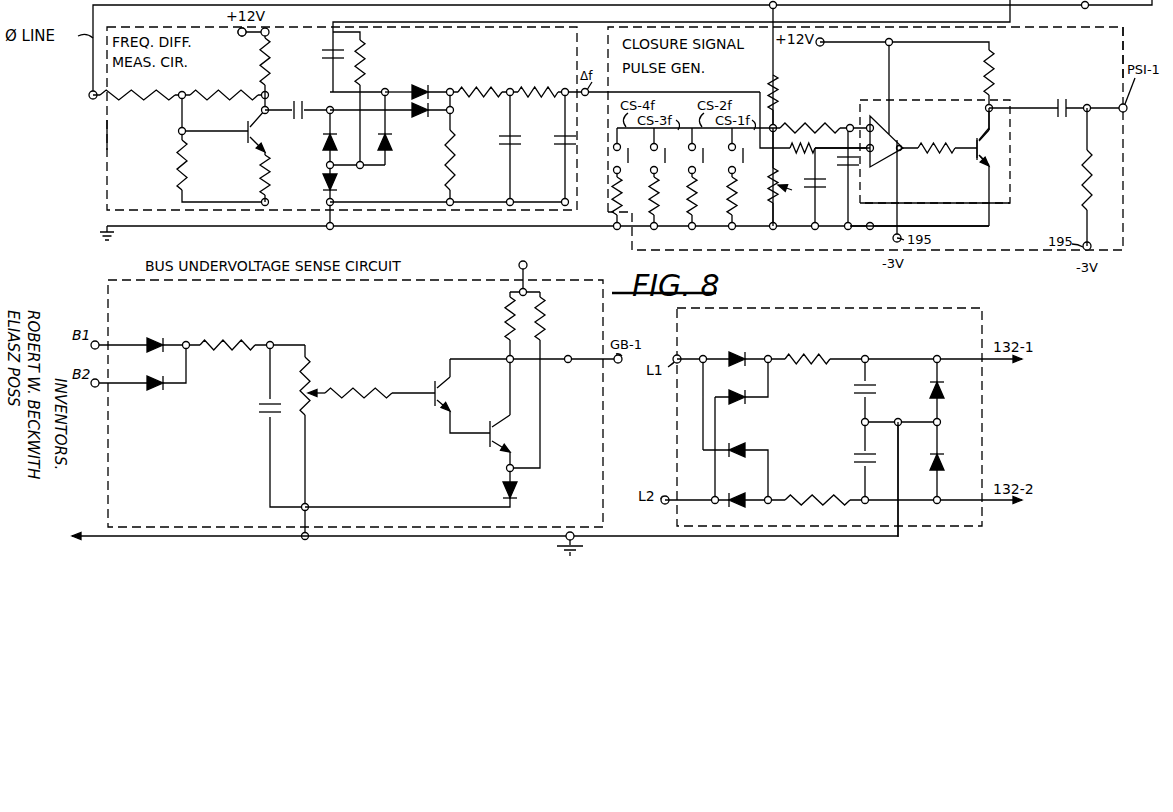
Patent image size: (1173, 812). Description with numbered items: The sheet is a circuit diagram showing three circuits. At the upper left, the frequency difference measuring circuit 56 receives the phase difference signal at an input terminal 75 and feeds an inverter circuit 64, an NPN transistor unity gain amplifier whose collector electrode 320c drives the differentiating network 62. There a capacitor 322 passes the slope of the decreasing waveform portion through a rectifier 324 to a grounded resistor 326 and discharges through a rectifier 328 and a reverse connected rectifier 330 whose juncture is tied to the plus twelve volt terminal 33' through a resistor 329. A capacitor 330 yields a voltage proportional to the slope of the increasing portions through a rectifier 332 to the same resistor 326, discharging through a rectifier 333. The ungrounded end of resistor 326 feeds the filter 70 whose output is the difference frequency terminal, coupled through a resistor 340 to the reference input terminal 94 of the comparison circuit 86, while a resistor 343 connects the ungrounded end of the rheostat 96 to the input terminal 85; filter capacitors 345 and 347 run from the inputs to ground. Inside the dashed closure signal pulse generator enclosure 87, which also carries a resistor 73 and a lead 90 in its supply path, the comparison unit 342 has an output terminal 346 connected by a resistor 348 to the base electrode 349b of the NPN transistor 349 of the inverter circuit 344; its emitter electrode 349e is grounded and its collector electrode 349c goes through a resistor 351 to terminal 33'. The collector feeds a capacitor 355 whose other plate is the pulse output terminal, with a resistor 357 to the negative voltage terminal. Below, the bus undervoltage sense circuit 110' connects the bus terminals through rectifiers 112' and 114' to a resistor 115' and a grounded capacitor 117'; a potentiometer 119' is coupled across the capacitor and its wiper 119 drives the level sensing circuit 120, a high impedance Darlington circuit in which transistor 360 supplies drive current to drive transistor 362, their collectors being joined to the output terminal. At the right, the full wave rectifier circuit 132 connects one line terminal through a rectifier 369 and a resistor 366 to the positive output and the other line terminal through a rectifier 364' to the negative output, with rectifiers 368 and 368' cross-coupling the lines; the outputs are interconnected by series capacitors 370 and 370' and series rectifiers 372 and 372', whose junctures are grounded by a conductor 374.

The input terminal 75 is at (93, 94).
The frequency difference measuring circuit 56 is at (107, 183).
The collector electrode 320c is at (262, 111).
The capacitor 322 is at (302, 116).
The inverter circuit 64 is at (277, 61).
The plus 12 volt terminal 33' is at (545, 44).
The capacitor 330 is at (328, 46).
The resistor 329 is at (364, 50).
The differentiating network 62 is at (398, 77).
The rectifier 328 is at (323, 146).
The rectifier 333 is at (394, 150).
The rectifier 332 is at (418, 86).
The rectifier 324 is at (408, 114).
The resistor 326 is at (455, 160).
The filter 70 is at (517, 97).
The resistor 73 is at (774, 64).
The conductor 90 is at (776, 96).
The rheostat 96 is at (784, 188).
The resistor 343 is at (818, 125).
The resistor 340 is at (797, 141).
The filter capacitor 345 is at (810, 184).
The filter capacitor 347 is at (843, 208).
The input terminal 85 is at (860, 115).
The comparison unit 342 is at (878, 123).
The output terminal 346 is at (894, 129).
The reference input terminal 94 is at (873, 152).
The resistor 348 is at (939, 151).
The resistor 351 is at (992, 71).
The comparison circuit 86 is at (935, 159).
The NPN transistor 349 is at (966, 142).
The transistor inverter circuit 344 is at (946, 115).
The collector electrode 349c is at (983, 138).
The base electrode 349b is at (974, 150).
The emitter electrode 349e is at (988, 158).
The capacitor 355 is at (1058, 104).
The resistor 357 is at (1090, 176).
The closure signal pulse generator 87 is at (1126, 53).
The bus undervoltage sense circuit 110' is at (328, 391).
The rectifier 112' is at (166, 332).
The rectifier 114' is at (157, 397).
The resistor 115' is at (227, 331).
The capacitor 117' is at (249, 413).
The potentiometer 119' is at (323, 384).
The potentiometer wiper 119 is at (325, 405).
The level sensing circuit 120 is at (495, 366).
The NPN transistor 360 is at (440, 378).
The drive transistor 362 is at (498, 418).
The full wave rectifier circuit 132 is at (856, 310).
The rectifier 369 is at (737, 351).
The rectifier 368' is at (766, 398).
The rectifier 368 is at (753, 440).
The rectifier 364' is at (758, 509).
The resistor 366 is at (816, 496).
The capacitor 370 is at (882, 388).
The capacitor 370' is at (846, 453).
The rectifier 372 is at (950, 407).
The rectifier 372' is at (974, 462).
The conductor 374 is at (902, 441).